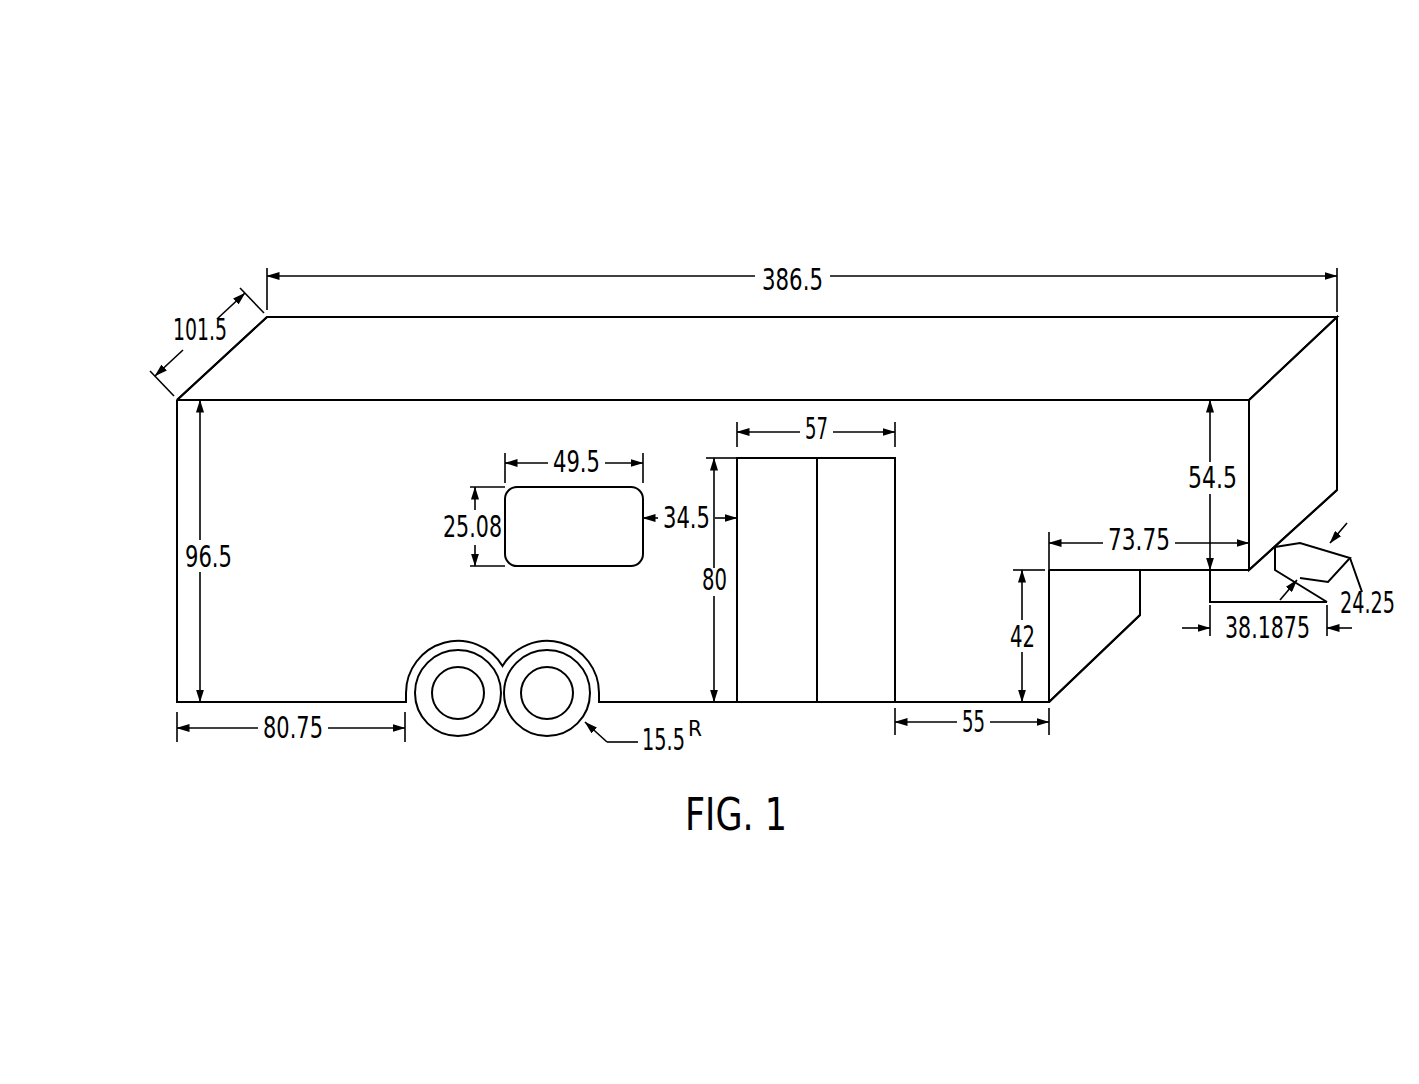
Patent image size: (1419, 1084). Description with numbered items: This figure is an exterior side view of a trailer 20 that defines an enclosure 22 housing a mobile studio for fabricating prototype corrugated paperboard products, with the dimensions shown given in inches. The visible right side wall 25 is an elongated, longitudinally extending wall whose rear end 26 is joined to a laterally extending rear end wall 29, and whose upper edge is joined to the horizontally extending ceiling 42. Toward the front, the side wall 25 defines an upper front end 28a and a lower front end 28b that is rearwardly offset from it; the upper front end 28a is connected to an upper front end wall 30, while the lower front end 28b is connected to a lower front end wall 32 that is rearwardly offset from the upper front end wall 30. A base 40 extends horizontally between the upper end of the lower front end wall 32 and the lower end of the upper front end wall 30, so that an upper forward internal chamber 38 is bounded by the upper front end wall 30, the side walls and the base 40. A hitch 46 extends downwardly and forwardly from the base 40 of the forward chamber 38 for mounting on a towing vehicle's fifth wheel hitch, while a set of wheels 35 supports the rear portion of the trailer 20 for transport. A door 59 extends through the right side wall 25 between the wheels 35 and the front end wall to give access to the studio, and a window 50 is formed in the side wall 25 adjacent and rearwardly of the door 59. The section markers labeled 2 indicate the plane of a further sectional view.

The trailer 20 is at (455, 226).
The enclosure 22 is at (570, 313).
The ceiling 42 is at (879, 367).
The upper front end wall 30 is at (1319, 440).
The upper forward internal chamber 38 is at (1129, 472).
The lower front end wall 32 is at (1132, 600).
The upper front end 28a is at (1250, 525).
The lower front end 28b is at (1049, 667).
The base 40 is at (1195, 572).
The hitch 46 is at (1308, 545).
The rear end wall 29 is at (177, 474).
The rear ends 26 is at (177, 523).
The right side wall 25 is at (350, 575).
The window 50 is at (558, 566).
The door 59 is at (895, 573).
The wheels 35 is at (458, 750).
The section line 2- 2 is at (148, 358).